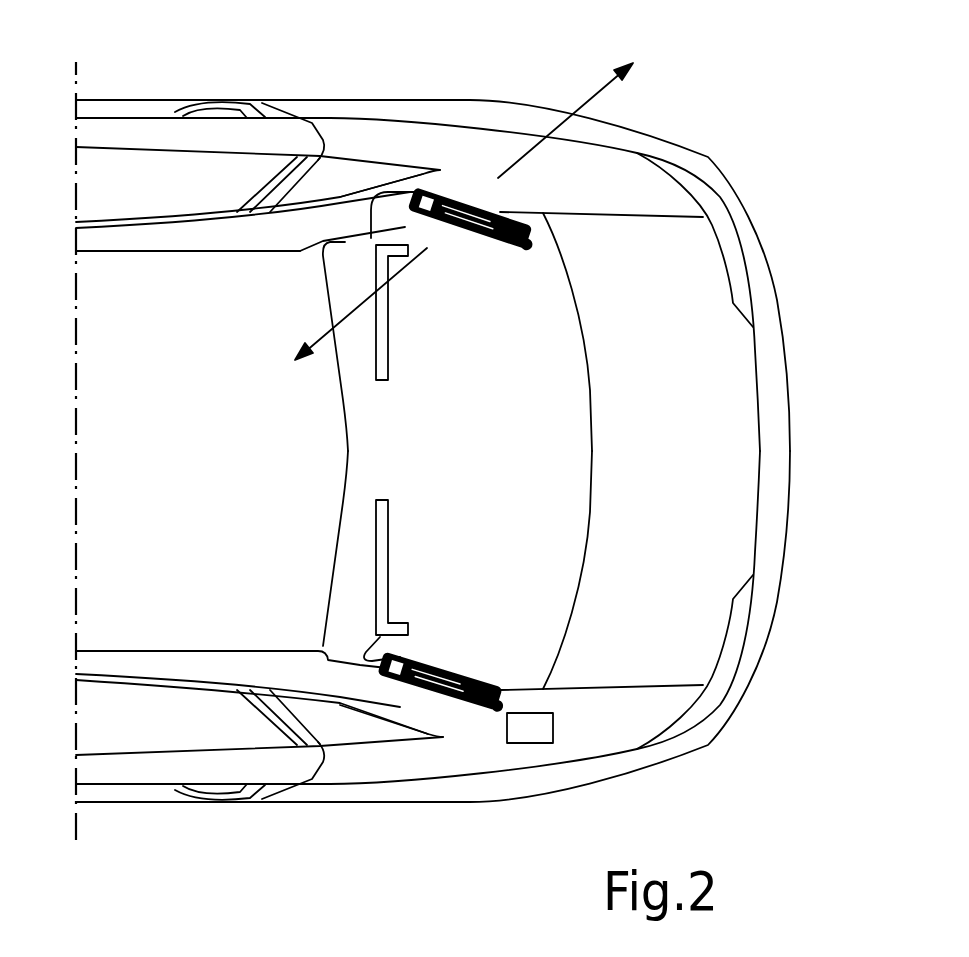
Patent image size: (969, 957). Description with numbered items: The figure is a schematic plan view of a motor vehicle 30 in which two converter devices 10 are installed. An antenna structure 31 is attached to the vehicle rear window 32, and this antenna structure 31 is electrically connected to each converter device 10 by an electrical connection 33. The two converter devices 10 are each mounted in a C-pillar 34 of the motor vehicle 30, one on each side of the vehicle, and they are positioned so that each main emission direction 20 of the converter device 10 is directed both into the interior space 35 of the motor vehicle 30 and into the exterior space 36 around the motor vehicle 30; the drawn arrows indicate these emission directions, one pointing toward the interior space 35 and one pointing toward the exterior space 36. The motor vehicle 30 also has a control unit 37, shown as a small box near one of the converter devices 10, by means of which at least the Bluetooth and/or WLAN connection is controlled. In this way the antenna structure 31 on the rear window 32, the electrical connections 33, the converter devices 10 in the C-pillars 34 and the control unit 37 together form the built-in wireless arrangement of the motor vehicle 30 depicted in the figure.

The converter device 10 is at (503, 211).
The main emission direction 20 is at (590, 100).
The motor vehicle 30 is at (485, 100).
The antenna structure 31 is at (388, 325).
The vehicle rear window 32 is at (465, 447).
The electrical connection 33 is at (369, 210).
The C-pillar 34 is at (368, 185).
The interior space 35 is at (166, 471).
The exterior space 36 is at (873, 193).
The control unit 37 is at (535, 731).